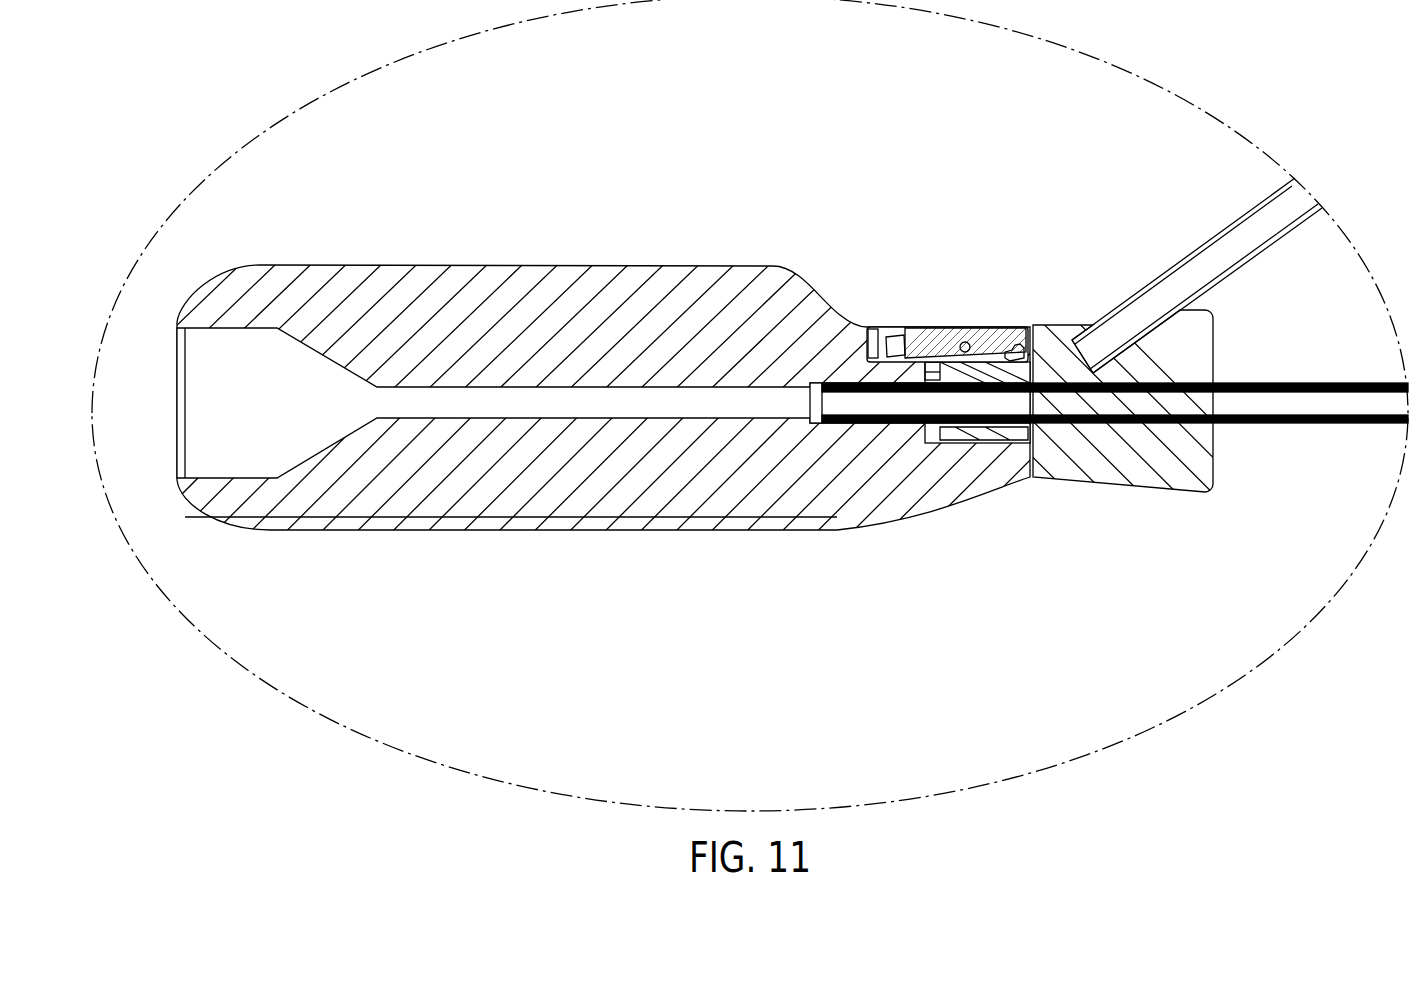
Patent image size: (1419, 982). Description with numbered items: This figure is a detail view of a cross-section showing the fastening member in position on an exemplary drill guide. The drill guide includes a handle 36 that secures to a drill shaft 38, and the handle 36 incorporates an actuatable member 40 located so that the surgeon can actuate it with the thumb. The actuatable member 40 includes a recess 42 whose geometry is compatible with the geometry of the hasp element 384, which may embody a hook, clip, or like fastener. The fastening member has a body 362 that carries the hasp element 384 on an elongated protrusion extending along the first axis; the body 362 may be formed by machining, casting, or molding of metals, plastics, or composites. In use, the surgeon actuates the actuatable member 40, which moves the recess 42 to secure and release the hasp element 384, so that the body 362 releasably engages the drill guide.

The handle 36 is at (920, 565).
The drill shaft 38 is at (1266, 425).
The actuatable member 40 is at (985, 318).
The recess 42 is at (1020, 318).
The body 362 is at (1200, 521).
The hasp element 384 is at (1013, 372).